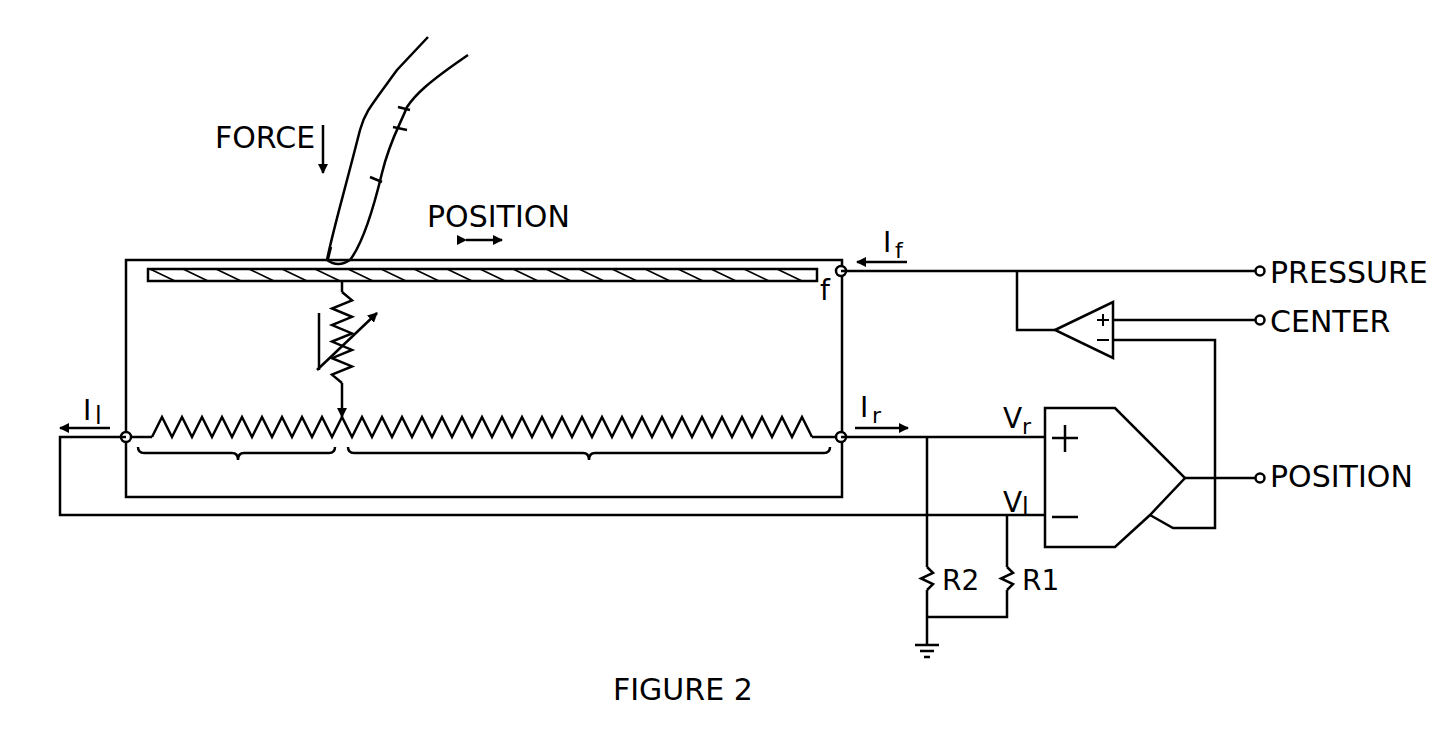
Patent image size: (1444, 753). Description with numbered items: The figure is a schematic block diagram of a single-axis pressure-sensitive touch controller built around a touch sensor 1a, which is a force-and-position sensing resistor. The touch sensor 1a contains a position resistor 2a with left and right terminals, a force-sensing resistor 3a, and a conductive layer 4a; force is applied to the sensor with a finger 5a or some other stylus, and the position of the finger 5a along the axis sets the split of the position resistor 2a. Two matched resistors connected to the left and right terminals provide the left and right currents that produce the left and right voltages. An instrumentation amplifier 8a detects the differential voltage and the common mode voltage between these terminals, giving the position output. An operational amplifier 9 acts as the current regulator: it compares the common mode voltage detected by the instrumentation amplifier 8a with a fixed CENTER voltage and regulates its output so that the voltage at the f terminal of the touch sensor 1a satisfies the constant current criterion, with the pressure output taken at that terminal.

The touch sensor 1a is at (126, 337).
The position resistor 2a is at (625, 418).
The force-sensing resistor 3a is at (319, 348).
The conductive layer 4a is at (680, 279).
The finger 5a is at (407, 130).
The instrumentation amplifier 8a is at (1135, 434).
The operational amplifier 9 is at (1078, 337).